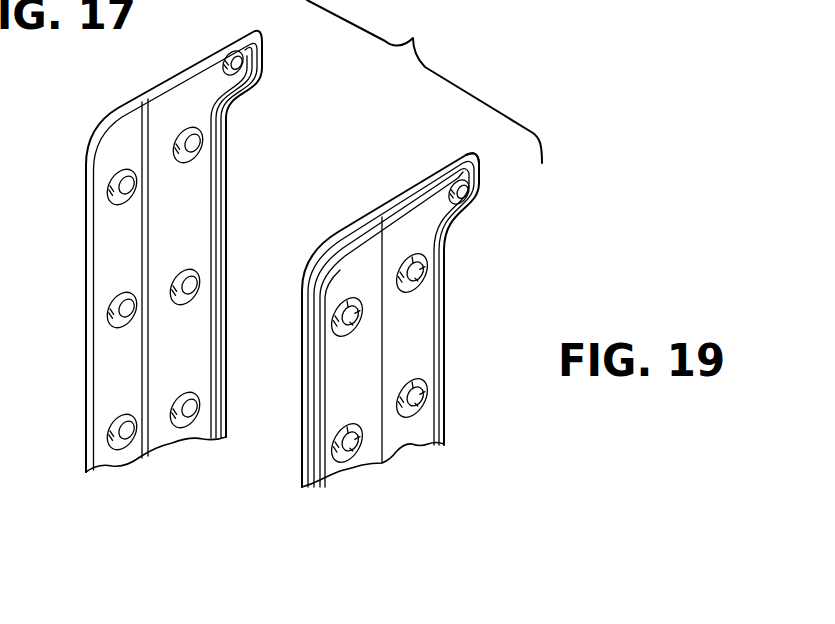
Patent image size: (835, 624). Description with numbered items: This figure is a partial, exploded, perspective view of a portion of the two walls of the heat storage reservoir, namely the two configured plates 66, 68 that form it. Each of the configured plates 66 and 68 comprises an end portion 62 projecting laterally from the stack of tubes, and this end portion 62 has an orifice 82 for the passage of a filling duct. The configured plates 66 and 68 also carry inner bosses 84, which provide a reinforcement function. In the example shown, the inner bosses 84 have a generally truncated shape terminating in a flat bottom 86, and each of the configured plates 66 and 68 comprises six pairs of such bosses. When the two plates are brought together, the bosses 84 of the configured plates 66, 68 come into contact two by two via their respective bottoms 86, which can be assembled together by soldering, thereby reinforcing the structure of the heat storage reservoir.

In FIG. 17, the end portion 62 is at (250, 36).
In FIG. 19, the end portion 62 is at (479, 190).
In FIG. 17, the configured plate 66 is at (112, 103).
In FIG. 19, the configured plate 68 is at (415, 349).
In FIG. 17, the orifice 82 is at (238, 60).
In FIG. 19, the orifice 82 is at (464, 191).
In FIG. 17, the inner bosses 84 is at (186, 168).
In FIG. 19, the inner bosses 84 is at (346, 319).
In FIG. 17, the flat bottom 86 is at (192, 145).